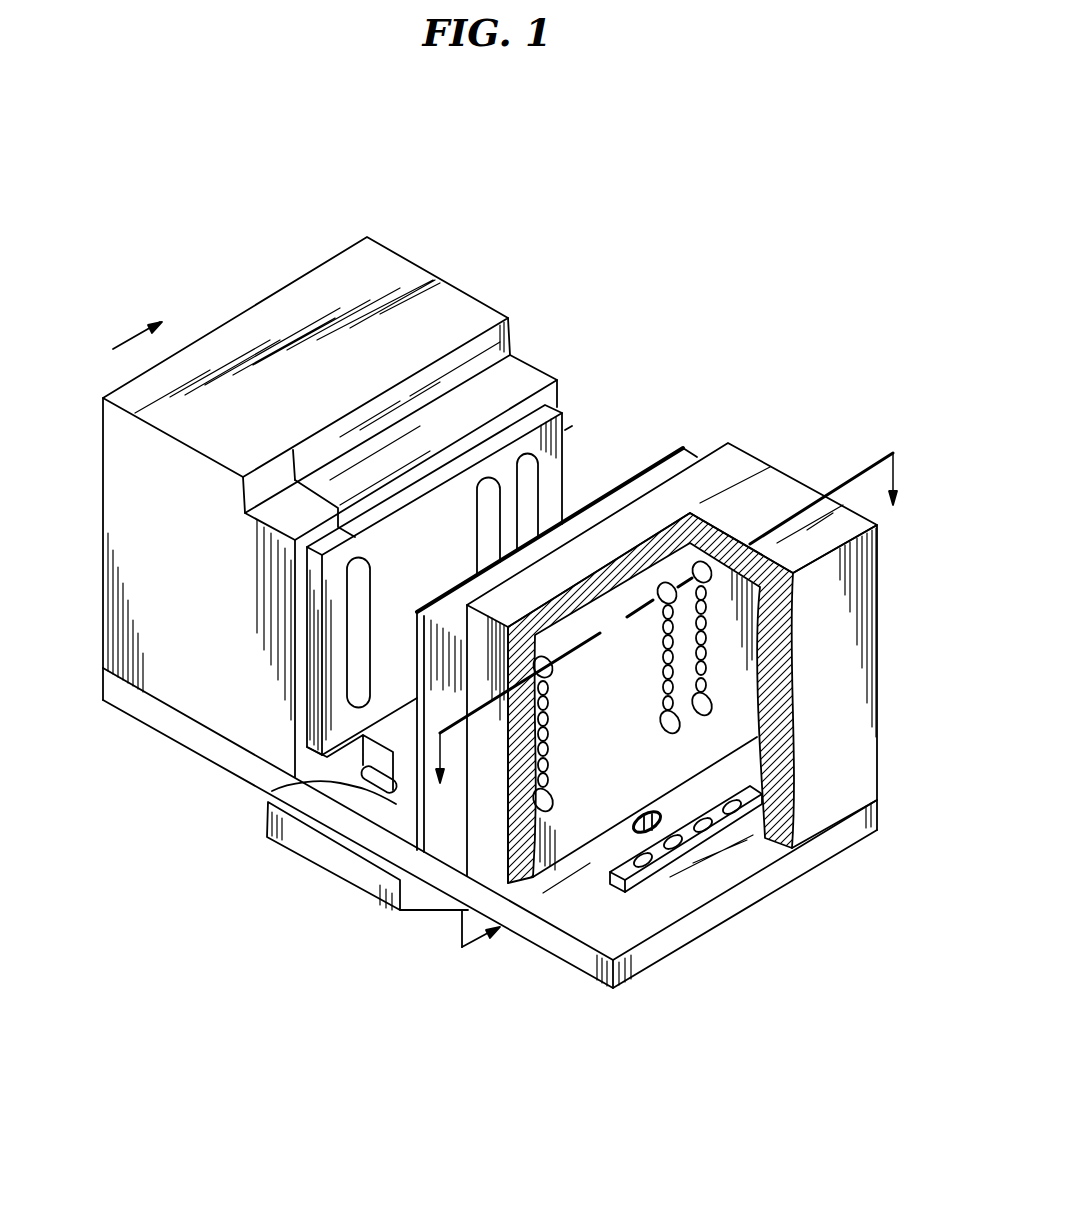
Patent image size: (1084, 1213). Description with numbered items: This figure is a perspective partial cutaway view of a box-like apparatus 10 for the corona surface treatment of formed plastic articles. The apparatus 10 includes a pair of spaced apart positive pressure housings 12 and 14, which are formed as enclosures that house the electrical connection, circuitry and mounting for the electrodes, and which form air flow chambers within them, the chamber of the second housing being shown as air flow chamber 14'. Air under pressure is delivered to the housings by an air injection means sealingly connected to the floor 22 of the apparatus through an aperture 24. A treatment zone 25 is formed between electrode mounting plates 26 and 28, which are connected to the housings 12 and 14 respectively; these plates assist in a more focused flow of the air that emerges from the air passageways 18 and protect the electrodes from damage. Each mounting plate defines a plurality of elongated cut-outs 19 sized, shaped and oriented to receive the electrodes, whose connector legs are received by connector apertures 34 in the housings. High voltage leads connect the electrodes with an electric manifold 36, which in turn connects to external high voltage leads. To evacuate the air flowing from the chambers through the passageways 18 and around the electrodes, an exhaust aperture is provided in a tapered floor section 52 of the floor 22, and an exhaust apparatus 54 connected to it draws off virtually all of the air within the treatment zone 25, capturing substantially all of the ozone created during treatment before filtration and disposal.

The apparatus 10 is at (672, 254).
The positive pressure housing 12 is at (210, 343).
The positive pressure housing 14 is at (695, 661).
The air flow chamber 14' is at (844, 686).
The air passageways 18 is at (693, 683).
The elongated cut-outs 19 is at (361, 565).
The floor 22 is at (623, 934).
The aperture 24 is at (640, 826).
The treatment zone 25 is at (594, 462).
The electrode mounting plate 26 is at (588, 433).
The electrode mounting plate 28 is at (658, 464).
The connector apertures 34 is at (548, 797).
The electric manifold 36 is at (720, 866).
The tapered floor section 52 is at (272, 791).
The exhaust apparatus 54 is at (320, 875).